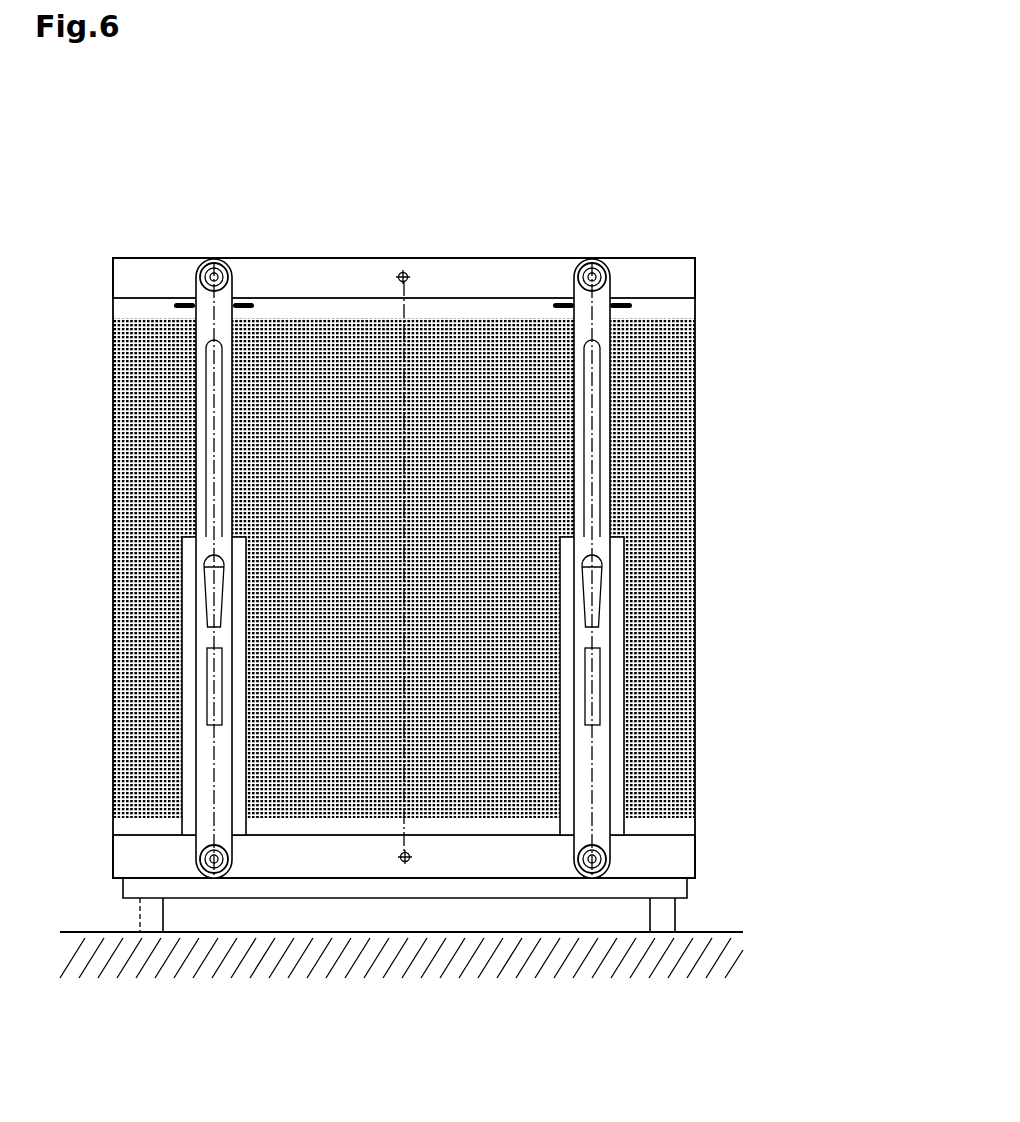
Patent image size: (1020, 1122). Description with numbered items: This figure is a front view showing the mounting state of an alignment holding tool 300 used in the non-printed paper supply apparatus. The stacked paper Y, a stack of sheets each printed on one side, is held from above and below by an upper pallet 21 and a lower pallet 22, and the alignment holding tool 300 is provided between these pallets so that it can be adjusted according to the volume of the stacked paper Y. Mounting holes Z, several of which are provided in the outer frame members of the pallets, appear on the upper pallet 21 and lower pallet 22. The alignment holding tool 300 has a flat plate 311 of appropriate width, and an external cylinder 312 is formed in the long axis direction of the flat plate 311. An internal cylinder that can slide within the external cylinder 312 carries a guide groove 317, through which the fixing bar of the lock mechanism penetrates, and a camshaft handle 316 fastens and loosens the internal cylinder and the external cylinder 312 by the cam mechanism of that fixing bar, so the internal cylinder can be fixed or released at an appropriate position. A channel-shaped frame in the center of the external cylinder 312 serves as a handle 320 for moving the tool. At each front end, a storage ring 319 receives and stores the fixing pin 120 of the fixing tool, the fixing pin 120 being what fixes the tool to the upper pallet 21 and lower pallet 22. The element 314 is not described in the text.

The fixing pin 120 is at (594, 277).
The storage ring 319 is at (622, 302).
The upper pallet 21 is at (708, 260).
The lower pallet 22 is at (708, 838).
The upper strap 314 is at (600, 328).
The guide groove 317 is at (596, 408).
The stacked paper Y is at (660, 475).
The alignment holding tool 300 is at (640, 548).
The camshaft handle 316 is at (596, 598).
The handle 320 is at (598, 682).
The flat plate 311 is at (608, 733).
The external cylinder 312 is at (605, 778).
The mounting hole Z is at (402, 272).